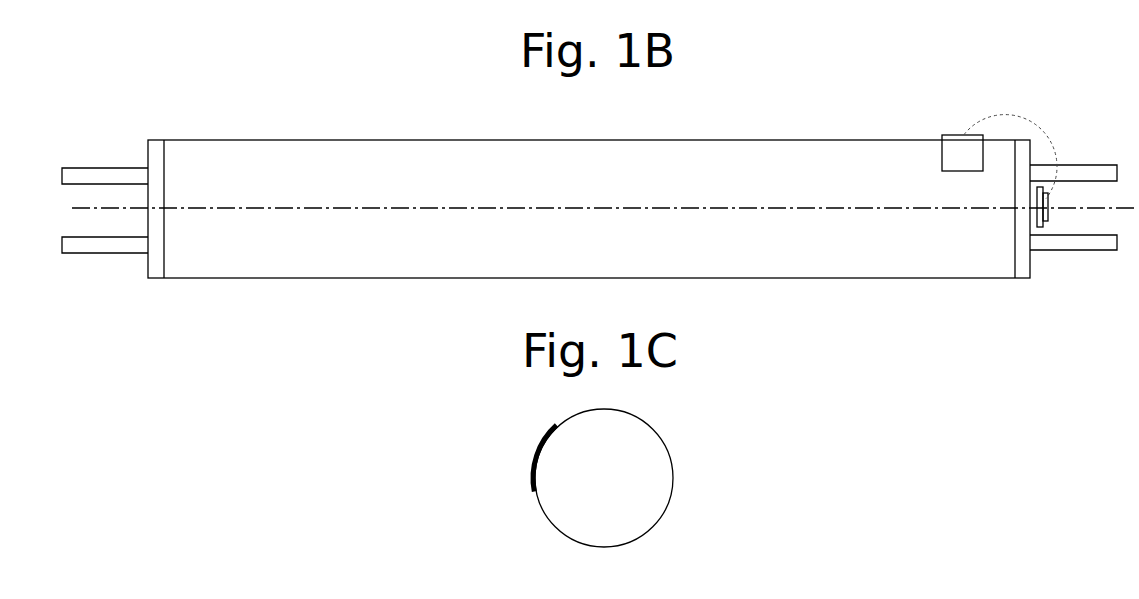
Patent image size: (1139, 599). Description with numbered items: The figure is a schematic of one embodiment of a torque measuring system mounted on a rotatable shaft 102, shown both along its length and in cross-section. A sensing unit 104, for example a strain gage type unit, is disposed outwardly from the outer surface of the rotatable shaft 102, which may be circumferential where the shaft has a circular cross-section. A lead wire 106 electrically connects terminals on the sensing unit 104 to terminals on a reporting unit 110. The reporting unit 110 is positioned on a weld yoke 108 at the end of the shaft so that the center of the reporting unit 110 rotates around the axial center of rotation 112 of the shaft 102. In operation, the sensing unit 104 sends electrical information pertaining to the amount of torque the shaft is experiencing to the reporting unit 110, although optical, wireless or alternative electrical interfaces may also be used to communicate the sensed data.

In FIG. 1B, the rotatable shaft 102 is at (628, 129).
In FIG. 1C, the rotatable shaft 102 is at (658, 419).
In FIG. 1B, the sensing unit 104 is at (945, 125).
In FIG. 1C, the sensing unit 104 is at (534, 437).
In FIG. 1B, the lead wire 106 is at (1038, 120).
In FIG. 1B, the weld yoke 108 is at (1056, 262).
In FIG. 1B, the reporting unit 110 is at (1058, 213).
In FIG. 1B, the axial center of rotation 112 is at (455, 219).